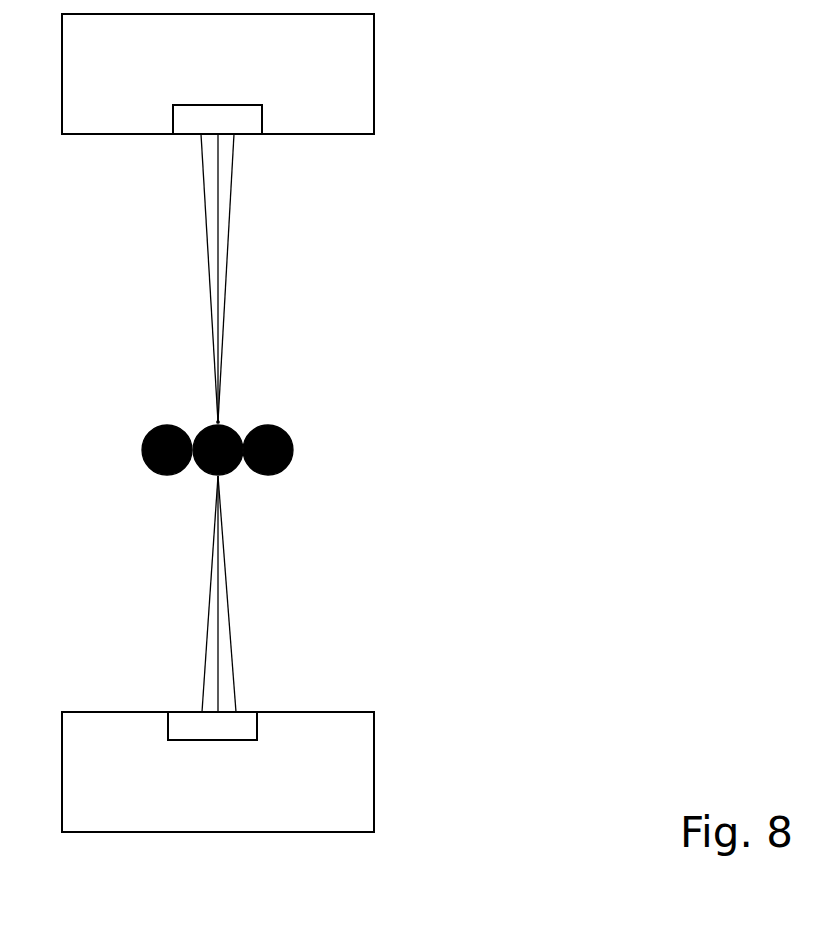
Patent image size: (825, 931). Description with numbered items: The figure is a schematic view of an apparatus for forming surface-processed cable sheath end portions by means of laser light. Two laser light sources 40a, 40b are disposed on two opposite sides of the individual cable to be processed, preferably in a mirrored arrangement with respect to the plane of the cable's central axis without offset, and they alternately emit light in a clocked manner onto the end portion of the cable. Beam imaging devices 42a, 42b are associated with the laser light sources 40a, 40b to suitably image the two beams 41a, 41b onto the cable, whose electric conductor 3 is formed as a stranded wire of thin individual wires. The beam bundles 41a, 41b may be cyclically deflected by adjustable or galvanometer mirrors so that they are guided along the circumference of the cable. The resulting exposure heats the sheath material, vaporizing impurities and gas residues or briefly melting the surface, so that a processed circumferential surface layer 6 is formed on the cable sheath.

The laser light source 40a is at (374, 58).
The beam imaging device 42a is at (234, 119).
The beam 41a is at (224, 189).
The circumferential surface layer 6 is at (223, 419).
The electric conductor 3 is at (294, 450).
The beam 41b is at (225, 679).
The beam imaging device 42b is at (217, 731).
The laser light source 40b is at (374, 771).